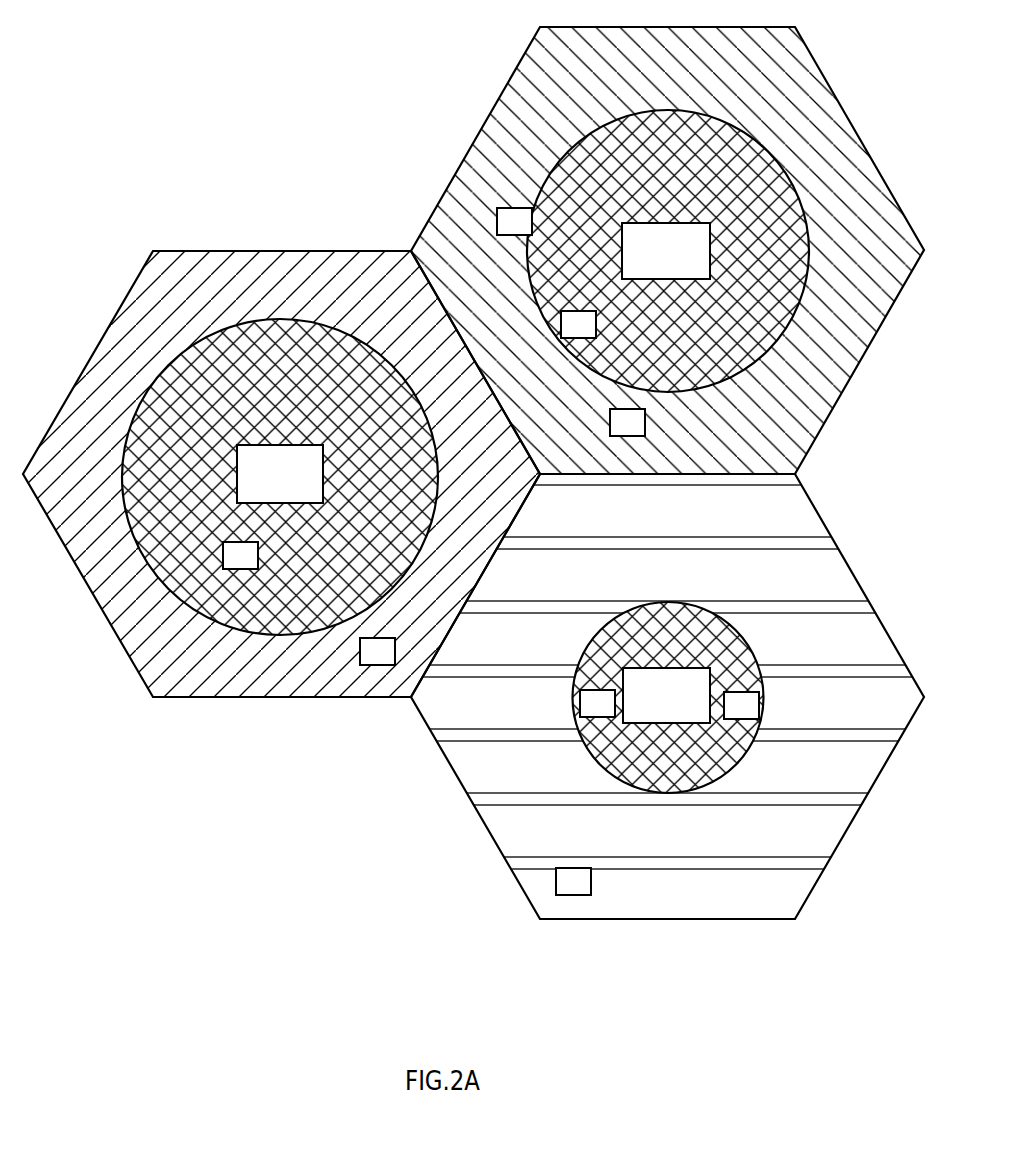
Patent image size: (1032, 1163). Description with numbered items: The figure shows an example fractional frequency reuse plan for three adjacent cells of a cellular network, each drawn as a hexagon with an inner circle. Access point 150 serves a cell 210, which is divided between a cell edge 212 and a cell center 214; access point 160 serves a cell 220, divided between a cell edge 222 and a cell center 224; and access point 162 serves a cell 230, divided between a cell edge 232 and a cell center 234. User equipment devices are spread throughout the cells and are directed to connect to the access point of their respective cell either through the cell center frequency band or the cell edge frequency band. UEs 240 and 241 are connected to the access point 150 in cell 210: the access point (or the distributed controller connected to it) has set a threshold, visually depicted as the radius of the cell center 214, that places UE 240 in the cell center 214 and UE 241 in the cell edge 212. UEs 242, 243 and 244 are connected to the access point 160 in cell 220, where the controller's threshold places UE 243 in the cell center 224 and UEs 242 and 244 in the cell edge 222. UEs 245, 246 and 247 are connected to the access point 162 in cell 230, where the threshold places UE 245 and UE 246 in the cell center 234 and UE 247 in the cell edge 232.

The cell 210 is at (255, 251).
The cell edge 212 is at (192, 291).
The cell center 214 is at (296, 356).
The access point 150 is at (276, 445).
The UE 240 is at (223, 555).
The UE 241 is at (360, 652).
The cell 220 is at (474, 140).
The cell edge 222 is at (582, 66).
The cell center 224 is at (682, 164).
The access point 160 is at (668, 223).
The UE 242 is at (512, 235).
The UE 243 is at (596, 325).
The UE 244 is at (646, 422).
The cell 230 is at (452, 773).
The cell edge 232 is at (585, 519).
The cell center 234 is at (680, 633).
The access point 162 is at (690, 668).
The UE 245 is at (597, 717).
The UE 246 is at (730, 719).
The UE 247 is at (591, 880).